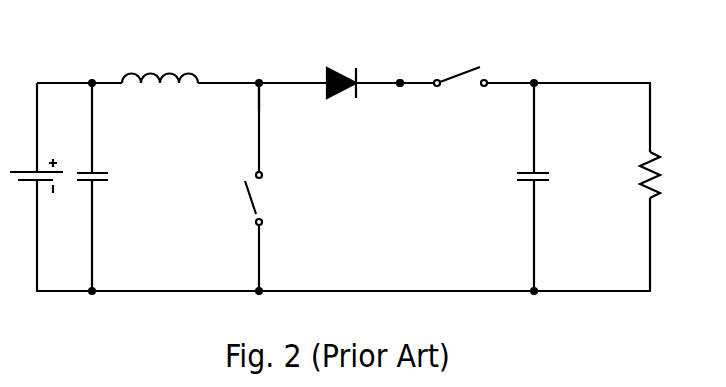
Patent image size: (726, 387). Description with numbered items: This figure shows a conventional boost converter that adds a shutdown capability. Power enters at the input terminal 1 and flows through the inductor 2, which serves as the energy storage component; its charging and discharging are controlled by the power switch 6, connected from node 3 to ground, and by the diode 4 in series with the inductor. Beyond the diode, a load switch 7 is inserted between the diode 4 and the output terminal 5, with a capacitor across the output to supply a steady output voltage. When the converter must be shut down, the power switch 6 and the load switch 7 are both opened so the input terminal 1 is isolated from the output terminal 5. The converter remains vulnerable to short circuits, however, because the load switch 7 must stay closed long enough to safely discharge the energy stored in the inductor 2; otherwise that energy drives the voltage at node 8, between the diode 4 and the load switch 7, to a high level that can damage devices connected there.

The input terminal 1 is at (92, 79).
The inductor 2 is at (170, 72).
The node between inductor and diode 3 is at (262, 80).
The diode 4 is at (341, 68).
The output terminal 5 is at (540, 80).
The power switch 6 is at (250, 208).
The load switch 7 is at (457, 70).
The node 8 is at (400, 87).